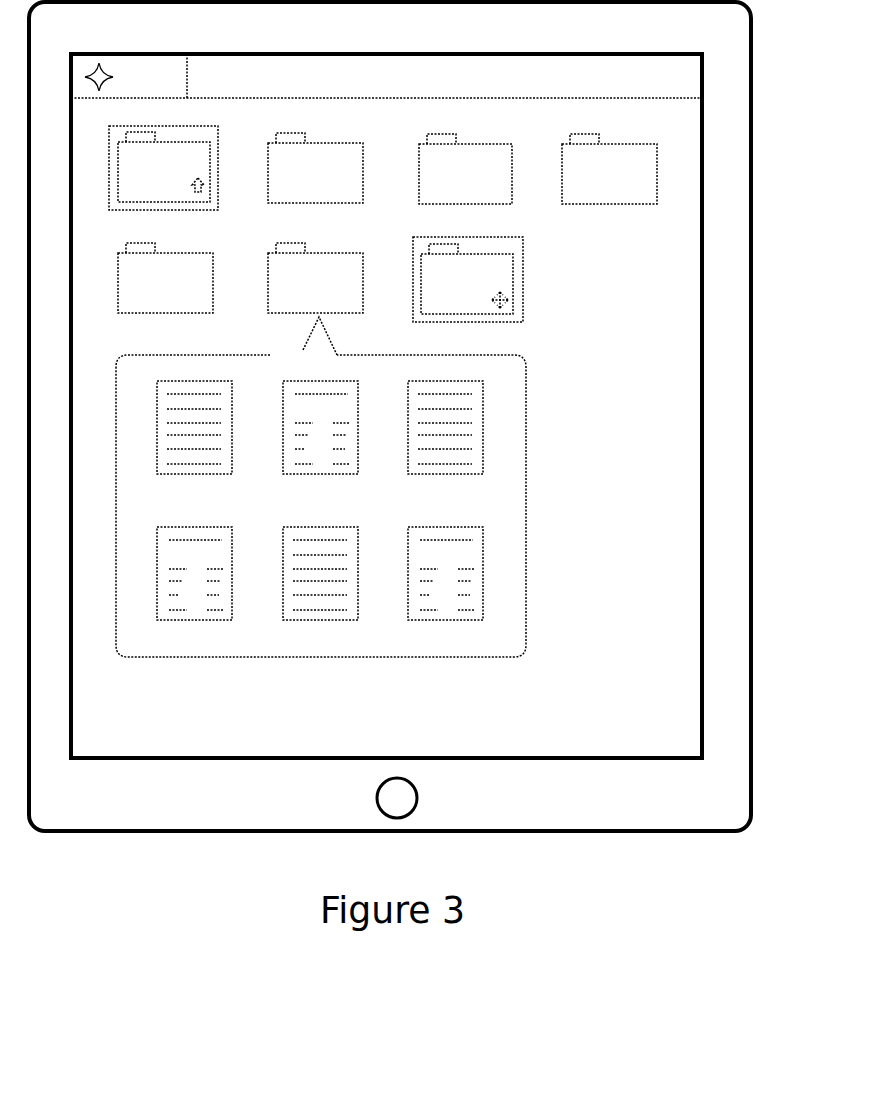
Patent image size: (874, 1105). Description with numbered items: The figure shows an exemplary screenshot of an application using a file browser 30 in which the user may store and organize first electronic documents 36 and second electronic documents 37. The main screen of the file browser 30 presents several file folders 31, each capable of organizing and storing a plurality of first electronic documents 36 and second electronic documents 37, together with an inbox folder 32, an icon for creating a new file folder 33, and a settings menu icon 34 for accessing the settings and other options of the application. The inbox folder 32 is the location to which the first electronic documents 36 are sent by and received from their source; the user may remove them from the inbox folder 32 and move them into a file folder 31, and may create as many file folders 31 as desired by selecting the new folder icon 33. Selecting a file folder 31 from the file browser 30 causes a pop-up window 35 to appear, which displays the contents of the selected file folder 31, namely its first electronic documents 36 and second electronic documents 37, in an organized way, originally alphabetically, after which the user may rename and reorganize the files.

The file browser 30 is at (147, 792).
The file folder 31 is at (360, 143).
The inbox folder 32 is at (218, 135).
The new folder icon 33 is at (523, 243).
The settings menu icon 34 is at (107, 63).
The pop-up window 35 is at (526, 500).
The first electronic documents 36 is at (157, 400).
The second electronic documents 37 is at (294, 380).